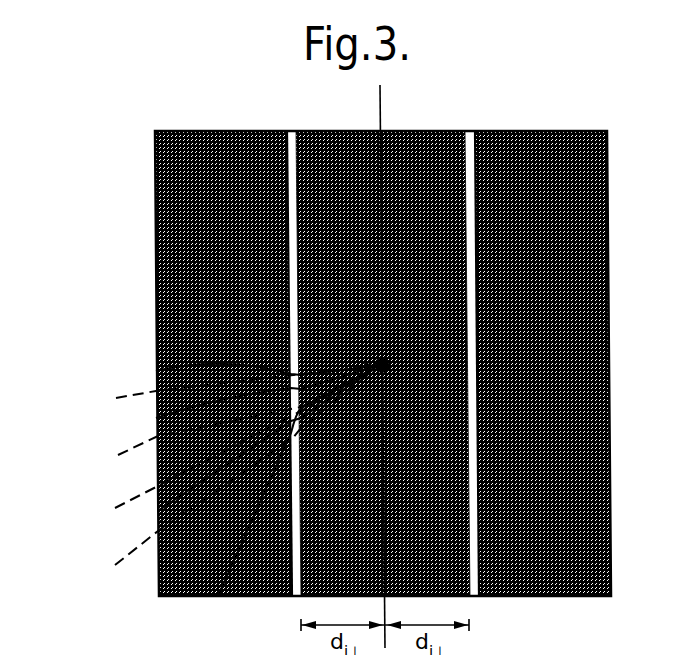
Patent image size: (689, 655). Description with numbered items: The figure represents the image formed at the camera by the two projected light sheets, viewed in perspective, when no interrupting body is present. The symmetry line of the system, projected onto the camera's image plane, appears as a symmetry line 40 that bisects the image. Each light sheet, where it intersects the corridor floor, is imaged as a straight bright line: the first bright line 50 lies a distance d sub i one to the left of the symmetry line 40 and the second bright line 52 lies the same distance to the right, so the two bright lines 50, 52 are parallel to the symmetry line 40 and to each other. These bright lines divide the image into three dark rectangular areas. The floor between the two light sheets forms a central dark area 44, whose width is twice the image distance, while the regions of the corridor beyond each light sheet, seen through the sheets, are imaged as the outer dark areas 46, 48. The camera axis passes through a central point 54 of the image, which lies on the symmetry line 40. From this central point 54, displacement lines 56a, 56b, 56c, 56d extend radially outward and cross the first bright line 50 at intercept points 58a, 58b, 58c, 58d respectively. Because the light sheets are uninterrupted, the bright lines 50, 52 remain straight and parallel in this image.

The symmetry line 40 is at (374, 102).
The central dark area 44 is at (446, 473).
The outer dark area 46 is at (172, 150).
The outer dark area 48 is at (575, 217).
The first bright line 50 is at (285, 566).
The second bright line 52 is at (470, 566).
The central point 54 is at (381, 354).
The displacement line 56a is at (103, 562).
The displacement line 56b is at (103, 509).
The displacement line 56c is at (103, 451).
The displacement line 56d is at (103, 392).
The intercept point 58a is at (282, 497).
The intercept point 58b is at (243, 453).
The intercept point 58c is at (243, 400).
The intercept point 58d is at (148, 363).